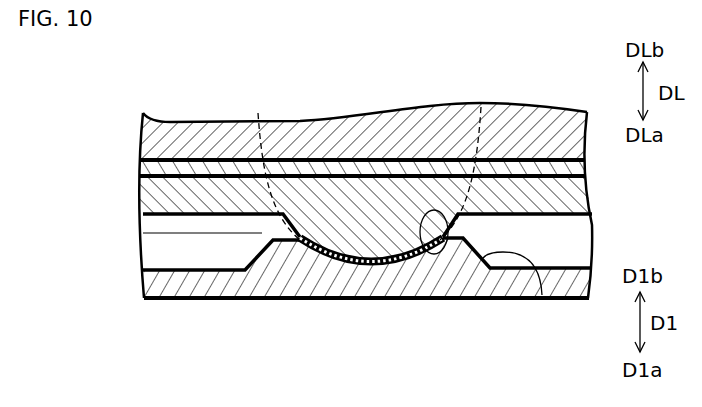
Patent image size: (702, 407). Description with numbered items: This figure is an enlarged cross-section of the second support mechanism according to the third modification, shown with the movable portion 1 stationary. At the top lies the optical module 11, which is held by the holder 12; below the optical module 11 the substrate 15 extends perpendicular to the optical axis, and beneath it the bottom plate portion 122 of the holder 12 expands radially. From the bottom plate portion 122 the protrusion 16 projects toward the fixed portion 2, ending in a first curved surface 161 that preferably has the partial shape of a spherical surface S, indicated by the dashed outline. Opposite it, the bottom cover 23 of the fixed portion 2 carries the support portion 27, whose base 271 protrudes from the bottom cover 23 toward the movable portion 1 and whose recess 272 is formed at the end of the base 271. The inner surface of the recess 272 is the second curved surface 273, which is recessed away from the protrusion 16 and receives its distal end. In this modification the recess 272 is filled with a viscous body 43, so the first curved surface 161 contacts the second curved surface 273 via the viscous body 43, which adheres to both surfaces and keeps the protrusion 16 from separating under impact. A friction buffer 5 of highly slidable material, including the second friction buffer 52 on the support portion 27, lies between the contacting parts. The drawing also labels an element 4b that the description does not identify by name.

The movable portion 1 is at (208, 126).
The optical module 11 is at (143, 132).
The substrate 15 is at (144, 167).
The bottom plate portion 122 is at (144, 200).
The holder 12 is at (585, 190).
The first curved surface 161 is at (280, 222).
The support portion 27 is at (150, 270).
The bottom cover 23 is at (155, 279).
The fixed portion 2 is at (184, 301).
The protrusion 16 is at (338, 276).
The friction buffer 5 is at (328, 285).
The second friction buffer 52 is at (369, 268).
The bottom surface 4b is at (379, 268).
The viscous body 43 is at (386, 272).
The recess 272 is at (424, 262).
The second curved surface 273 is at (458, 250).
The base 271 is at (542, 295).
The spherical surface S is at (486, 117).